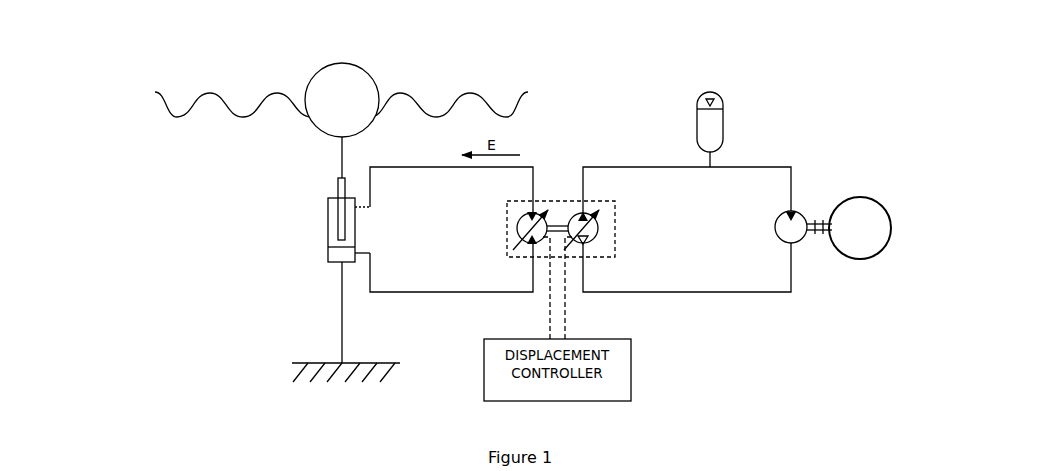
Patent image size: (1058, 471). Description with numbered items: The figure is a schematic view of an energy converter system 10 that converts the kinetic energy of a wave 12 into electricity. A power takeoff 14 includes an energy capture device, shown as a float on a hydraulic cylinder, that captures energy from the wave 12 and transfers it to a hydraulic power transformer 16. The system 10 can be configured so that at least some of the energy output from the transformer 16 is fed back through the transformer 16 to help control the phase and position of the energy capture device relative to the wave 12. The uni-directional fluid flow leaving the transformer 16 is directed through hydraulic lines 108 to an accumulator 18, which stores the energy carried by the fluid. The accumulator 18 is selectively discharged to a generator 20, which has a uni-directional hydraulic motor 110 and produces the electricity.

The energy converter system 10 is at (610, 80).
The wave 12 is at (160, 100).
The power takeoff 14 is at (272, 227).
The hydraulic power transformer 16 is at (561, 173).
The accumulator 18 is at (709, 117).
The generator 20 is at (830, 205).
The hydraulic lines 108 is at (693, 294).
The motor 110 is at (794, 231).